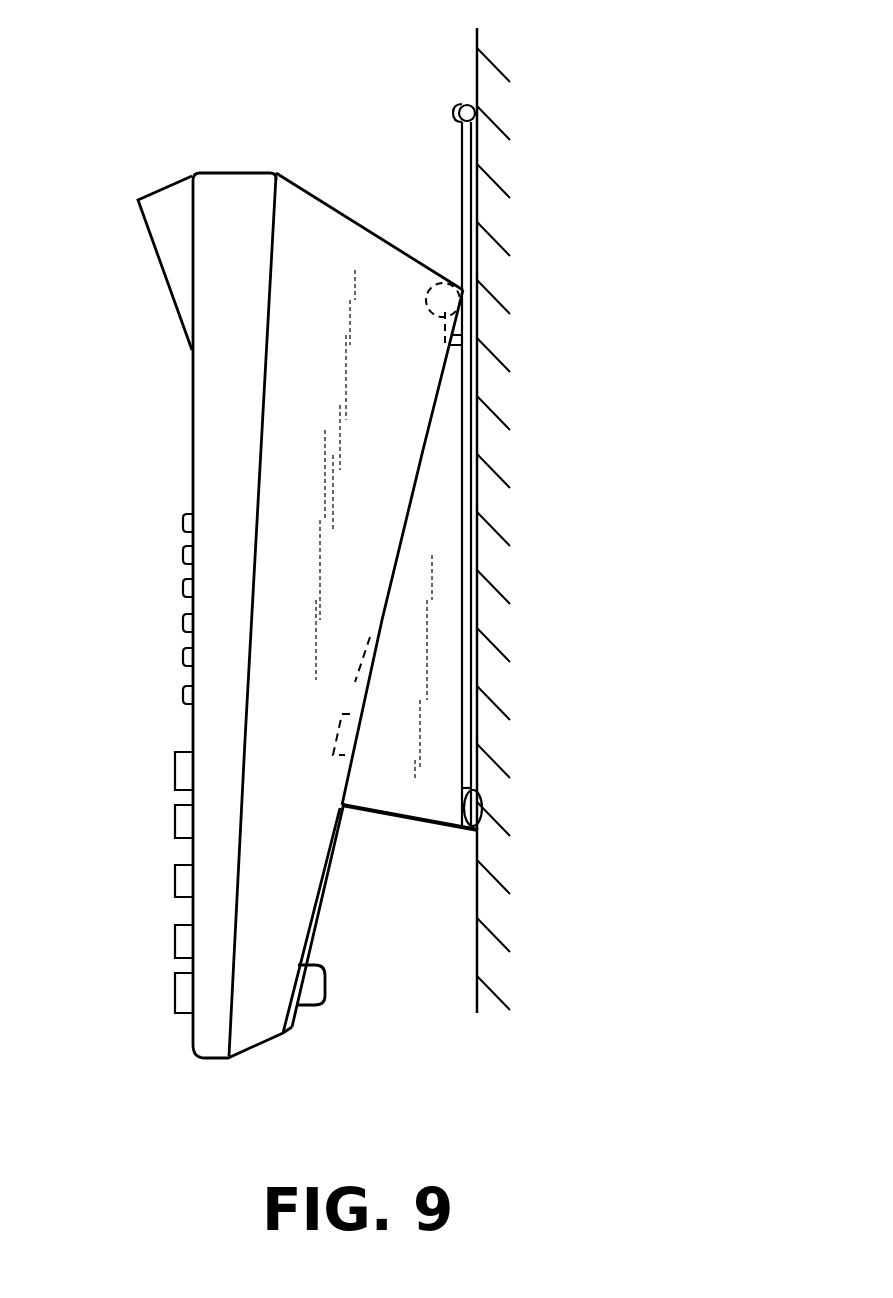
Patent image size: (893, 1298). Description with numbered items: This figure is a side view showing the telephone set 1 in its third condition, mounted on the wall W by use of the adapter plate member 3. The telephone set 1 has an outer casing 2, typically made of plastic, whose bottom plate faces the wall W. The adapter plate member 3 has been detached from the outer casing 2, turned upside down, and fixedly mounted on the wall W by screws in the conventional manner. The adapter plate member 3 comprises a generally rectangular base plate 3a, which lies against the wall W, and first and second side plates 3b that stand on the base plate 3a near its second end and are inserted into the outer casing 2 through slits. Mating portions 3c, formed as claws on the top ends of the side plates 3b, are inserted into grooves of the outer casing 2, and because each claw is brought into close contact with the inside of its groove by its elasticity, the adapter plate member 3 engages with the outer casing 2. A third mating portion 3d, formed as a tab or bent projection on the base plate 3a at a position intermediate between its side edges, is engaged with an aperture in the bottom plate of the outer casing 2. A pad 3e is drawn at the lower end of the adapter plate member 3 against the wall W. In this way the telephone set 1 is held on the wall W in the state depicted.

The wall W is at (477, 68).
The telephone set 1 is at (170, 543).
The outer casing 2 is at (318, 232).
The adapter plate member 3 is at (353, 531).
The base plate 3a is at (462, 207).
The side plate 3b is at (443, 692).
The mating portion 3c is at (330, 728).
The third mating portion 3d is at (458, 287).
The rubber foot 3e is at (485, 810).